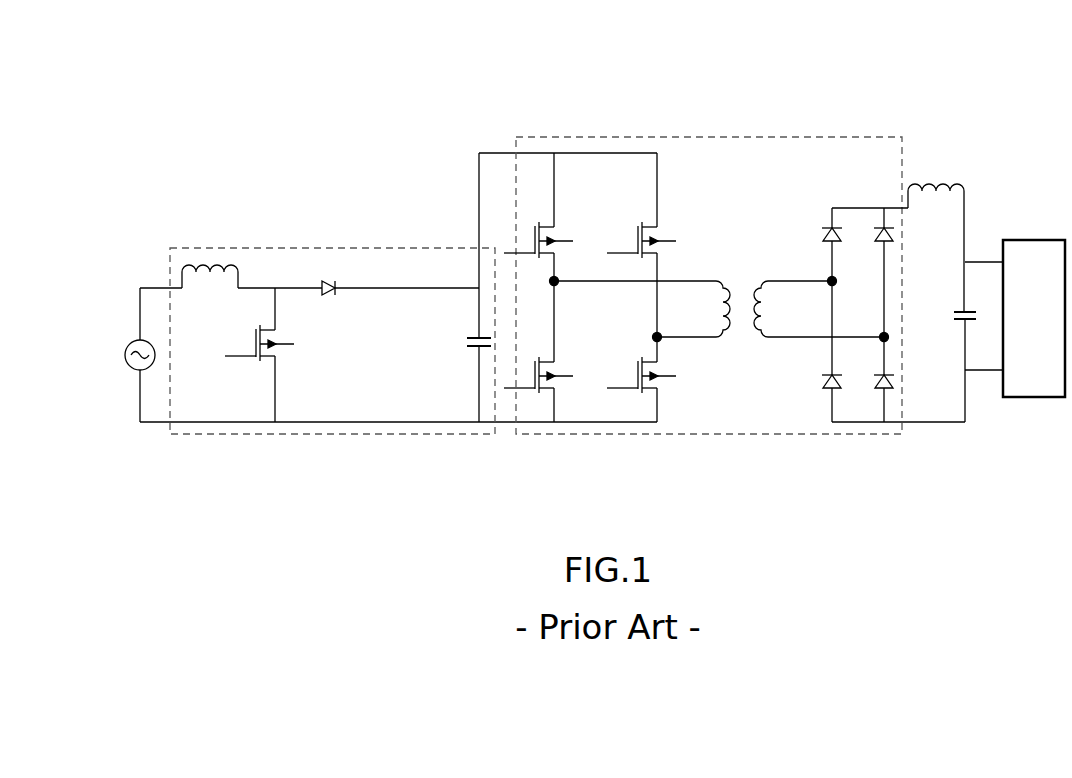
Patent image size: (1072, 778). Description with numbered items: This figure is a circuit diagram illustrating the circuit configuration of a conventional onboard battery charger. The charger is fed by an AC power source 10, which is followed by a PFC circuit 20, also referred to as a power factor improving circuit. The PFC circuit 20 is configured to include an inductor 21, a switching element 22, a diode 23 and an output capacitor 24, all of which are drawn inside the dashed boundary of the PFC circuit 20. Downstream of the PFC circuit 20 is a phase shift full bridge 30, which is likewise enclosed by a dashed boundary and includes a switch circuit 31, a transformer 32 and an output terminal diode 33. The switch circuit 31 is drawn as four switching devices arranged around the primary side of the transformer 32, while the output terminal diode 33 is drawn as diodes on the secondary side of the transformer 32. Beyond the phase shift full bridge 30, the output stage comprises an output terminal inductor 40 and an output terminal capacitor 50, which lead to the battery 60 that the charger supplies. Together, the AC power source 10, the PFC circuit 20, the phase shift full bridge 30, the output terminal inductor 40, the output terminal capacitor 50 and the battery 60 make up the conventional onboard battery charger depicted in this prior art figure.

The AC power source 10 is at (130, 343).
The PFC circuit 20 is at (398, 247).
The inductor 21 is at (210, 262).
The switching element 22 is at (250, 358).
The diode 23 is at (329, 283).
The output capacitor 24 is at (470, 348).
The phase shift full bridge 30 is at (676, 136).
The switch circuit 31 is at (560, 232).
The transformer 32 is at (740, 275).
The output terminal diode 33 is at (825, 228).
The output terminal inductor 40 is at (943, 182).
The output terminal capacitor 50 is at (957, 322).
The battery 60 is at (1035, 240).